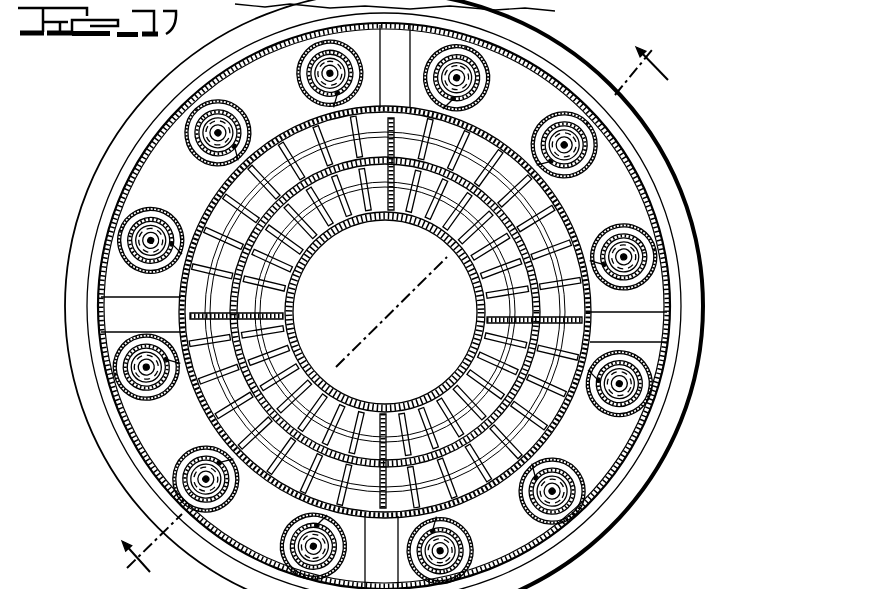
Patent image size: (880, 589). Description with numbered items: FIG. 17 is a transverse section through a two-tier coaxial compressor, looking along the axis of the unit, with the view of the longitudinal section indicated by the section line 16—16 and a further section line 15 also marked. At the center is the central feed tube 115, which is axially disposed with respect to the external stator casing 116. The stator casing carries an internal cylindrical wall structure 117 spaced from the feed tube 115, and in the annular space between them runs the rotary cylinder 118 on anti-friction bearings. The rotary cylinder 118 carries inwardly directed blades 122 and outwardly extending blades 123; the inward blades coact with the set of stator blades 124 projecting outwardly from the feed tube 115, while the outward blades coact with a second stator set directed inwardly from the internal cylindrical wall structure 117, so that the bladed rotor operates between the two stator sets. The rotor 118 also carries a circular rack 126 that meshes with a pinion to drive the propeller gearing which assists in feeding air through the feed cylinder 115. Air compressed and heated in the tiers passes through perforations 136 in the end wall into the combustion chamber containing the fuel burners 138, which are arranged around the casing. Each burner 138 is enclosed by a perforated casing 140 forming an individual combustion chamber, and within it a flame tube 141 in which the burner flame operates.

The section line 15- 15 is at (625, 585).
The section line 16— 16 is at (67, 540).
The central feed tube 115 is at (416, 220).
The external stator casing 116 is at (563, 72).
The internal cylindrical wall structure 117 is at (541, 421).
The rotary cylinder 118 is at (573, 176).
The inwardly directed blades 122 is at (486, 327).
The outwardly extending blades 123 is at (606, 307).
The stator blades 124 is at (482, 277).
The circular rack 126 is at (596, 340).
The perforations 136 is at (515, 497).
The fuel burners 138 is at (470, 74).
The perforated casing 140 is at (670, 428).
The flame tube 141 is at (628, 392).